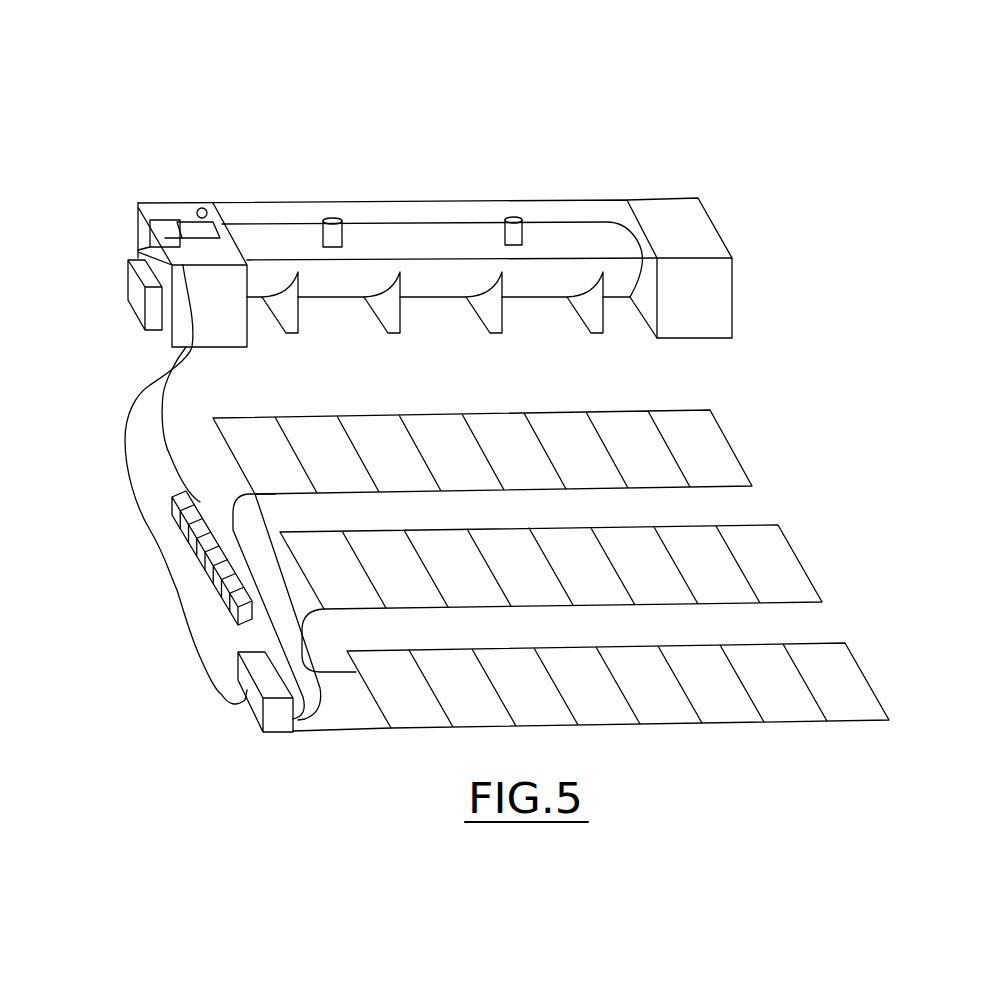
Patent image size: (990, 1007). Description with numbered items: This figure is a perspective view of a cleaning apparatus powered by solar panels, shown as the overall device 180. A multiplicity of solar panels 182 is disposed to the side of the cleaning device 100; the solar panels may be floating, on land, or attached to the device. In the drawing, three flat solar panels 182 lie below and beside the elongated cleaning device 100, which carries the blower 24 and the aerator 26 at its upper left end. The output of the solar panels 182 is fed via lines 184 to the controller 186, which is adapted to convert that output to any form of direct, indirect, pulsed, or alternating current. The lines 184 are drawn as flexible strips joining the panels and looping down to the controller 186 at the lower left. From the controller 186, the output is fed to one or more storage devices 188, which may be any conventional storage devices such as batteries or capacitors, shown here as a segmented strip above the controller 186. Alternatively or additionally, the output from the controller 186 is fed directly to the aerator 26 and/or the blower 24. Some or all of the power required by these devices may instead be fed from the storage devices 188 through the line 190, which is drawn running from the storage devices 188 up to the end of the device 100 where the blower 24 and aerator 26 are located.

The device 180 is at (450, 92).
The device 100 is at (460, 203).
The blower 24 is at (160, 224).
The aerator 26 is at (230, 172).
The line 190 is at (168, 430).
The storage device 188 is at (193, 514).
The controller 186 is at (260, 700).
The line 184 is at (240, 548).
The solar panel 182 is at (720, 452).